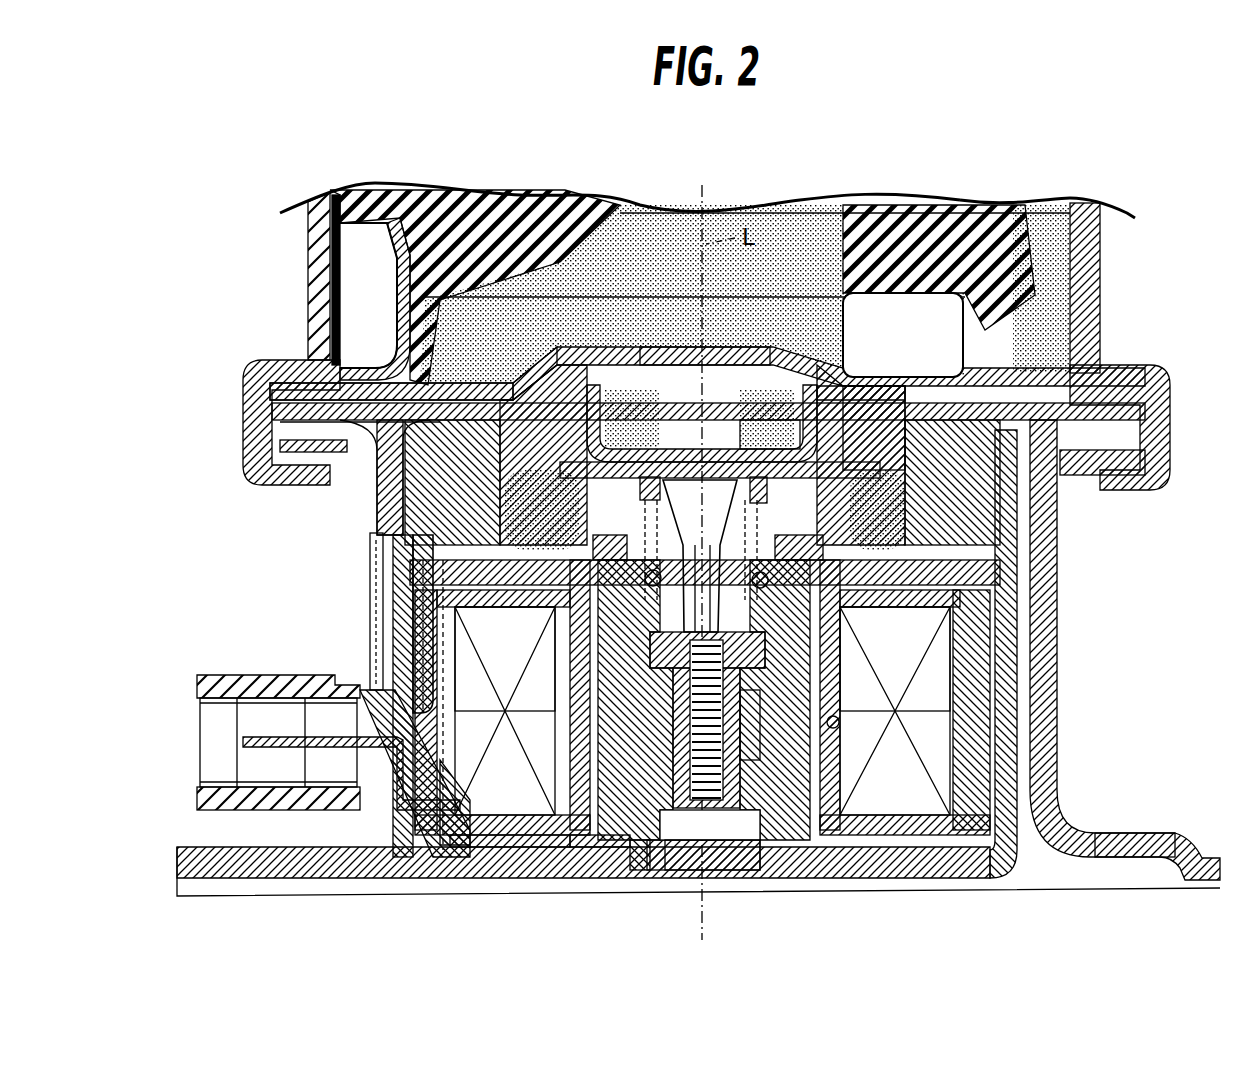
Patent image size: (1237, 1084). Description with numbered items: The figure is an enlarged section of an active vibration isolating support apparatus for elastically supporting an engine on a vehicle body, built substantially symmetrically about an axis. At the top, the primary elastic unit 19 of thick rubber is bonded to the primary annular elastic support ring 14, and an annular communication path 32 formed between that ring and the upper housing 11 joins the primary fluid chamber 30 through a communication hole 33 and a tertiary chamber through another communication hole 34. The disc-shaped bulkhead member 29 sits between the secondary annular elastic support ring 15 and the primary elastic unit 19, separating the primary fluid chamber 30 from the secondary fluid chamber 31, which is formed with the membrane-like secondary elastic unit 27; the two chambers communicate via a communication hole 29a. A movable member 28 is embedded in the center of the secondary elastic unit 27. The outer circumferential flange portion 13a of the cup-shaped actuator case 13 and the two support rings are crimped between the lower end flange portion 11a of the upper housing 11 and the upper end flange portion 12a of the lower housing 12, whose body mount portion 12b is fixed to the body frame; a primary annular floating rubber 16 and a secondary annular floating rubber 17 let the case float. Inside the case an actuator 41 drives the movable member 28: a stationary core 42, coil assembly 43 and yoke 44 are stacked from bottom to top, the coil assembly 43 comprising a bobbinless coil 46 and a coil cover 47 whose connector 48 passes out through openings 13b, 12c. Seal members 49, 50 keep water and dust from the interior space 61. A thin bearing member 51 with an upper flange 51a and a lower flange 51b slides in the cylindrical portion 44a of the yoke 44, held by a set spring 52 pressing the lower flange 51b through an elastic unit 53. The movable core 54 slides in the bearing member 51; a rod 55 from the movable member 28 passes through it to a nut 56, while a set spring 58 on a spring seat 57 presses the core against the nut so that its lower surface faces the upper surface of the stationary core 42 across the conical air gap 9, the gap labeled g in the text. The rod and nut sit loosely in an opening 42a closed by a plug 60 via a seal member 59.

The primary fluid chamber 30 is at (655, 183).
The communication hole 34 is at (1100, 225).
The upper housing 11 is at (300, 290).
The annular communication path 32 is at (338, 268).
The lower end flange portion 11a is at (243, 410).
The primary annular elastic support ring 14 is at (400, 325).
The primary elastic unit 19 is at (470, 240).
The bulkhead member 29 is at (593, 340).
The secondary annular elastic support ring 15 is at (452, 380).
The secondary fluid chamber 31 is at (535, 372).
The communication hole 29a is at (680, 365).
The communication hole 33 is at (905, 300).
The interior space 61 is at (872, 420).
The secondary elastic unit 27 is at (882, 385).
The movable member 28 is at (650, 416).
The actuator 41 is at (755, 432).
The outer circumferential flange portion 13a is at (1110, 415).
The upper end flange portion 12a is at (1105, 475).
The primary annular floating rubber 16 is at (345, 470).
The opening 12c is at (370, 538).
The secondary annular floating rubber 17 is at (372, 562).
The upper flange 51a is at (580, 508).
The yoke 44 is at (880, 520).
The spring seat 57 is at (640, 525).
The rod 55 is at (750, 555).
The set spring 58 is at (724, 500).
The bearing member 51 is at (832, 576).
The lower housing 12 is at (1062, 603).
The body mount portion 12b is at (1128, 832).
The actuator case 13 is at (1022, 730).
The coil assembly 43 is at (990, 668).
The connector 48 is at (268, 675).
The opening 13b is at (405, 642).
The seal member 49 is at (553, 615).
The coil cover 47 is at (458, 682).
The movable core 54 is at (575, 700).
The nut 56 is at (662, 727).
The gap 9 is at (752, 700).
The cylindrical portion 44a is at (840, 655).
The elastic unit 53 is at (855, 792).
The set spring 52 is at (838, 721).
The opening 42a is at (665, 800).
The plug 60 is at (700, 885).
The seal member 59 is at (641, 870).
The lower flange 51b is at (582, 882).
The seal member 50 is at (522, 850).
The bobbinless coil 46 is at (493, 803).
The stationary core 42 is at (791, 886).